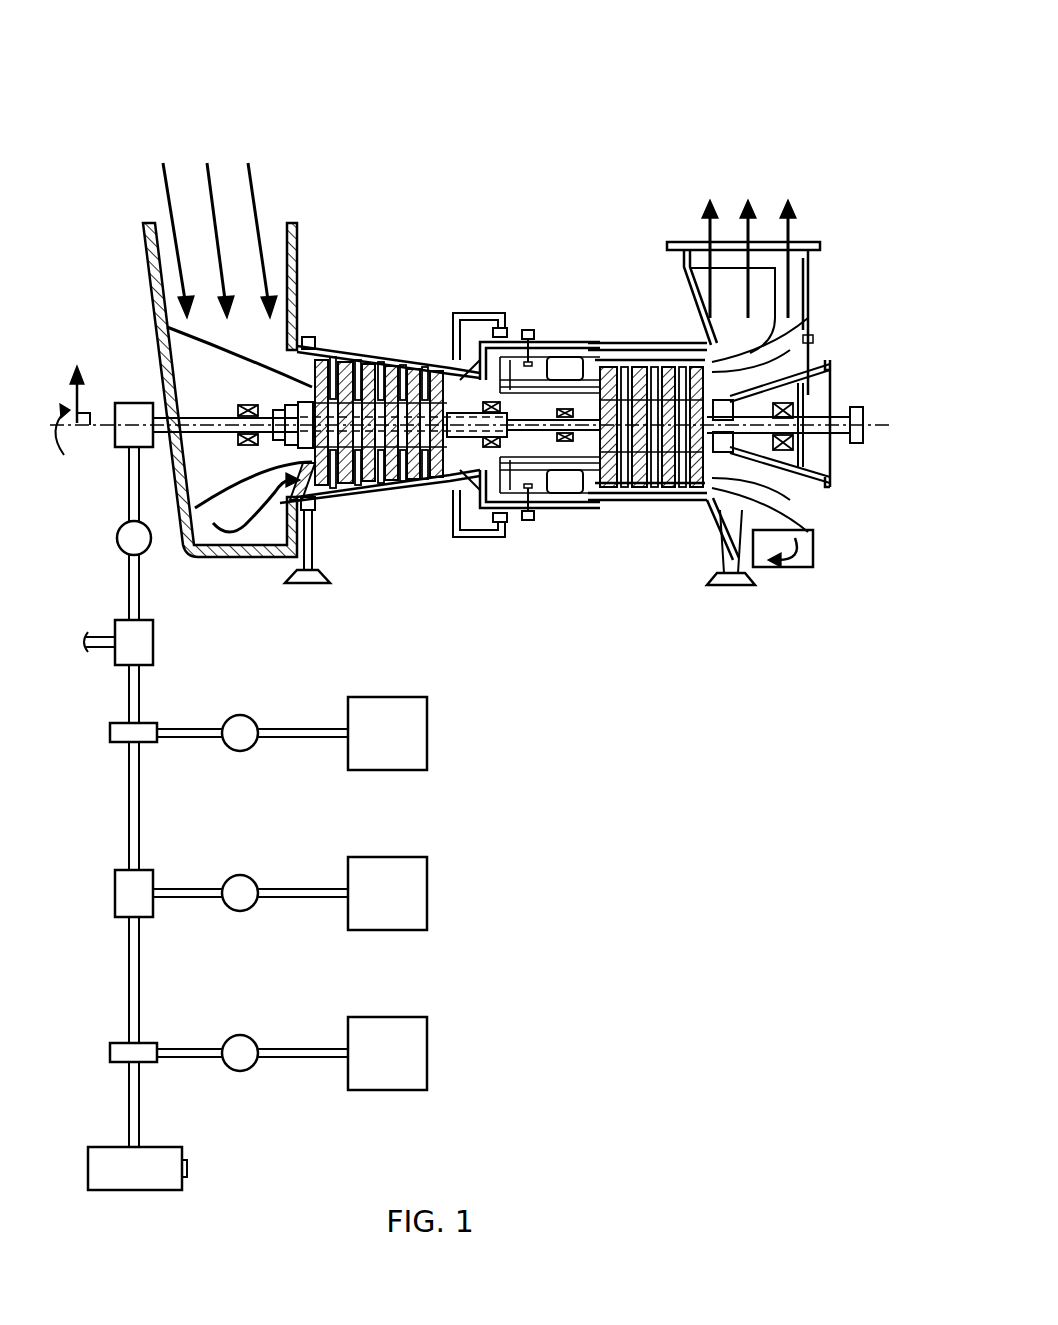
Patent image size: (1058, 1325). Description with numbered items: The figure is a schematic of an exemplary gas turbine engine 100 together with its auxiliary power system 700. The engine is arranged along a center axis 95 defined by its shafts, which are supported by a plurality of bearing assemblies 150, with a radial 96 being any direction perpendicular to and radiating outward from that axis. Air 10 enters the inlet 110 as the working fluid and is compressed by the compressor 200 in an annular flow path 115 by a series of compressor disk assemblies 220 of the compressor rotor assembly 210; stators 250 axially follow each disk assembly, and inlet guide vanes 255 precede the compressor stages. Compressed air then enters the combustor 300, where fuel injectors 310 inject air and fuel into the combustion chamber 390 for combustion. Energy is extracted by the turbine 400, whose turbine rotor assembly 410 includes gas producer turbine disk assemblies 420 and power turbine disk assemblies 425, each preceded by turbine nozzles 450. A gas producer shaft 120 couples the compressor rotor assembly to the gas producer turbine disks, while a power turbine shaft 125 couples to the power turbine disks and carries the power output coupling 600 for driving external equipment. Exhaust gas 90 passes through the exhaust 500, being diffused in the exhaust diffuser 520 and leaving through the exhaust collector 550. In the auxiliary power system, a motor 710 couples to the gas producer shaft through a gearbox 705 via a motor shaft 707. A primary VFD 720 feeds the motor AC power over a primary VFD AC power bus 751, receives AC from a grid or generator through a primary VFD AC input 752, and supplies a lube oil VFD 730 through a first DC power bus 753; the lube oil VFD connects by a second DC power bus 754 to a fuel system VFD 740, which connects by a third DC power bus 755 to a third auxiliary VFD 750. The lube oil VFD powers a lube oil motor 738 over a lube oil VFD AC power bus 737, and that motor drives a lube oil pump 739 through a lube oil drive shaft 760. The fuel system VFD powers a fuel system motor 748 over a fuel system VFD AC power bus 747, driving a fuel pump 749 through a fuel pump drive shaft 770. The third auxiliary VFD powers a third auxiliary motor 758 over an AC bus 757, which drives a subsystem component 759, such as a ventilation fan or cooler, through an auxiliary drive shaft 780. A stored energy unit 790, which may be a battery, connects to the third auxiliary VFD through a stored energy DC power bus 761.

The gas turbine engine 100 is at (155, 30).
The air 10 is at (165, 192).
The inlet 110 is at (293, 141).
The annular flow path 115 is at (274, 354).
The gas producer shaft 120 is at (228, 420).
The power turbine shaft 125 is at (838, 420).
The bearing assemblies 150 is at (248, 446).
The center axis 95 is at (61, 448).
The radial 96 is at (80, 384).
The exhaust gas 90 is at (708, 228).
The compressor 200 is at (478, 141).
The compressor rotor assembly 210 is at (381, 558).
The compressor disk assemblies 220 is at (355, 490).
The compressor stationary vanes (stators) 250 is at (381, 362).
The inlet guide vanes 255 is at (307, 338).
The combustor 300 is at (580, 141).
The fuel injectors 310 is at (528, 330).
The combustion chamber 390 is at (565, 357).
The turbine 400 is at (703, 141).
The turbine rotor assembly 410 is at (647, 558).
The gas producer turbine disk assemblies 420 is at (615, 497).
The power turbine disk assemblies 425 is at (672, 497).
The turbine nozzles 450 is at (697, 368).
The exhaust 500 is at (840, 163).
The exhaust diffuser 520 is at (722, 340).
The exhaust collector 550 is at (690, 280).
The power output coupling 600 is at (865, 430).
The auxiliary power system 700 is at (264, 1142).
The gearbox 705 is at (142, 403).
The motor shaft 707 is at (128, 501).
The motor 710 is at (117, 539).
The primary variable frequency drive (VFD) 720 is at (155, 640).
The lube oil system VFD 730 is at (110, 735).
The lube oil VFD AC power bus 737 is at (192, 743).
The lube oil motor 738 is at (258, 721).
The lube oil pump 739 is at (410, 697).
The fuel system VFD 740 is at (113, 898).
The fuel system VFD AC power bus 747 is at (192, 901).
The fuel system motor 748 is at (258, 881).
The fuel pump 749 is at (410, 857).
The third auxiliary VFD 750 is at (110, 1055).
The primary VFD AC power bus 751 is at (128, 575).
The primary VFD AC input 752 is at (93, 656).
The first DC power bus 753 is at (143, 694).
The second DC power bus 754 is at (127, 811).
The third DC power bus 755 is at (127, 981).
The AC bus 757 is at (192, 1063).
The third auxiliary motor 758 is at (258, 1041).
The subsystem component 759 is at (410, 1017).
The lube oil drive shaft 760 is at (312, 743).
The stored energy DC power bus 761 is at (127, 1111).
The fuel pump drive shaft 770 is at (312, 901).
The auxiliary drive shaft 780 is at (312, 1063).
The stored energy unit 790 is at (133, 1192).